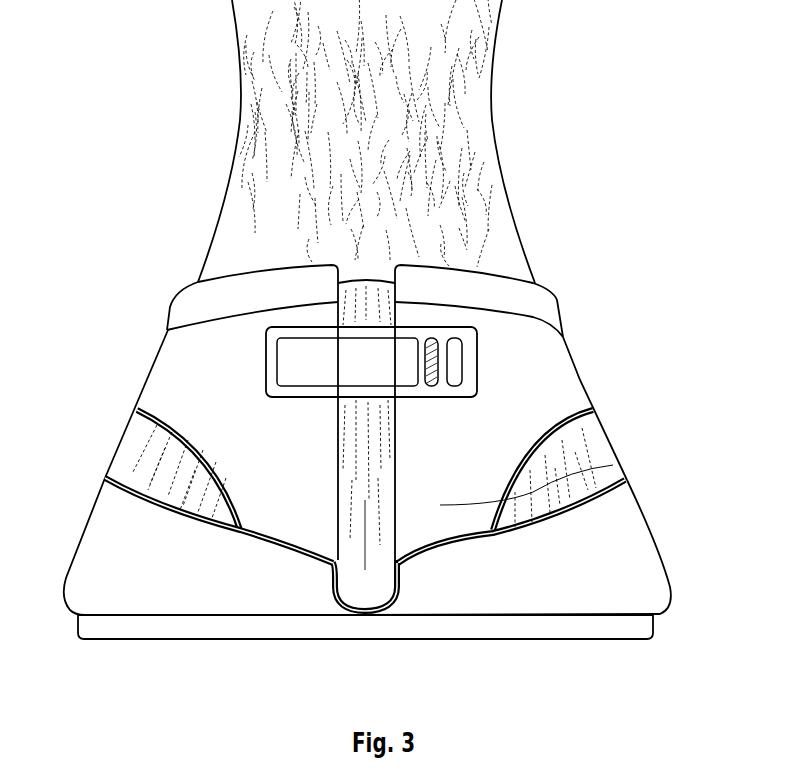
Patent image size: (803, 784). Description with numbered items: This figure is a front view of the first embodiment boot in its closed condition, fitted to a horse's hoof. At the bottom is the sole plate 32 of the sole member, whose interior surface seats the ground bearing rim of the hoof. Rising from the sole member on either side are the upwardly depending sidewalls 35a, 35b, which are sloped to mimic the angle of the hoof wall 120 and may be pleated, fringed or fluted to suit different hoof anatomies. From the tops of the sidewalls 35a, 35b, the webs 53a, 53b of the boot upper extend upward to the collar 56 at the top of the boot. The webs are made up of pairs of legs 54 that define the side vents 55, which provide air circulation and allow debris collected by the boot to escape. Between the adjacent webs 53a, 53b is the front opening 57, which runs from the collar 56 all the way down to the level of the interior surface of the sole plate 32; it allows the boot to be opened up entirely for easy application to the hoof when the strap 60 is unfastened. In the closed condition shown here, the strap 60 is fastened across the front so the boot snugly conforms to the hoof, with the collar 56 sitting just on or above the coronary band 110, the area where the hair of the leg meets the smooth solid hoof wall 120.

The coronary band 110 is at (503, 277).
The collar 56 is at (543, 307).
The strap 60 is at (467, 355).
The web 53a is at (170, 398).
The web 53b is at (543, 385).
The side vent 55 is at (128, 404).
The hoof wall 120 is at (568, 450).
The legs 54 is at (613, 465).
The sidewall 35a is at (118, 546).
The sidewall 35b is at (603, 547).
The sole plate 32 is at (146, 628).
The front opening 57 is at (378, 545).